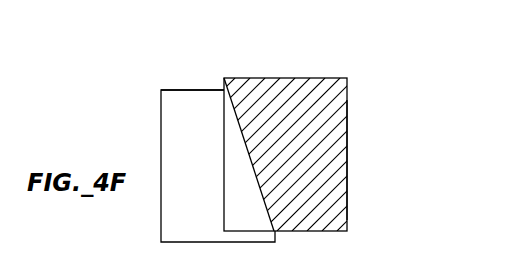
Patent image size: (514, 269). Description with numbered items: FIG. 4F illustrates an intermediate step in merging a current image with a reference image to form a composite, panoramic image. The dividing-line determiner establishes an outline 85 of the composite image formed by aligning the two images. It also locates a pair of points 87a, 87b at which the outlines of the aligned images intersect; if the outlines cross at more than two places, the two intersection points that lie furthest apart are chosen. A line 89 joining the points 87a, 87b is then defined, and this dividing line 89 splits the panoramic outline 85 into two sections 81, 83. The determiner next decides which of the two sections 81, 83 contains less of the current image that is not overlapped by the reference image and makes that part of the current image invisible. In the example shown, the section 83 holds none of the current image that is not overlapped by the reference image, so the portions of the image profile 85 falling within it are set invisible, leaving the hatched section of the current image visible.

The section 81 is at (346, 117).
The section 83 is at (161, 208).
The outline 85 is at (347, 175).
The point 87a is at (202, 89).
The point 87b is at (258, 218).
The line 89 is at (240, 89).